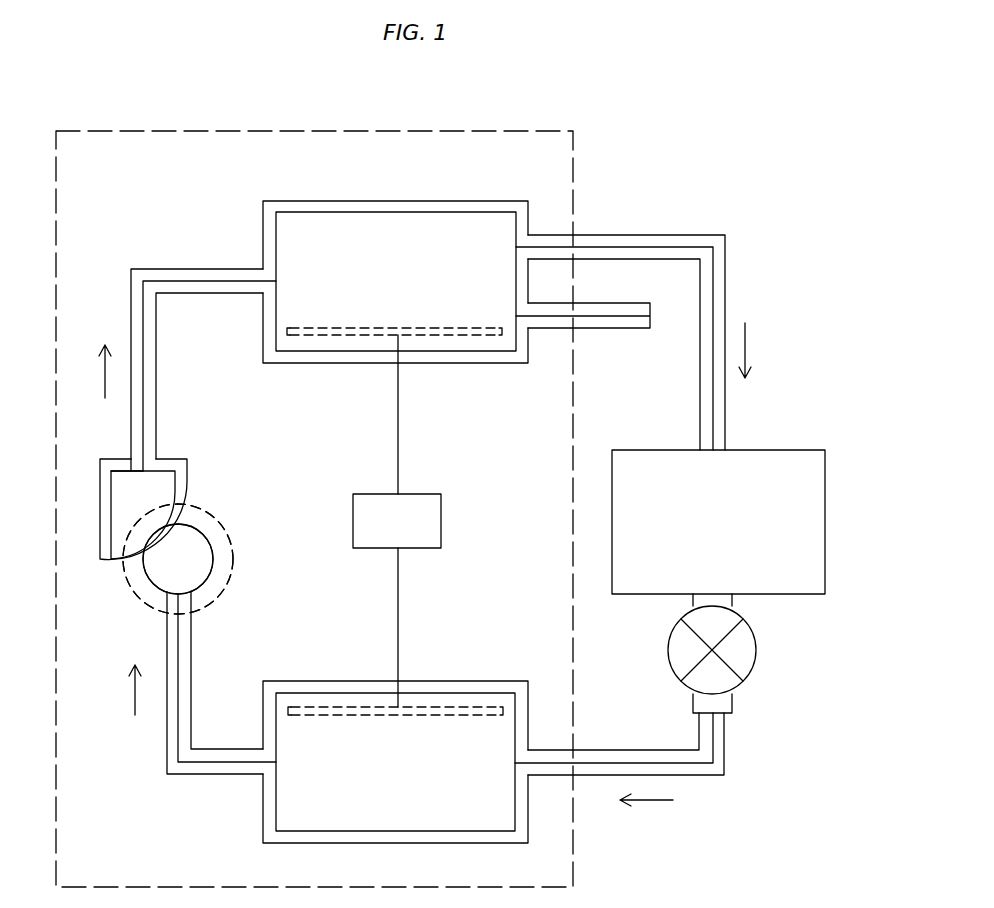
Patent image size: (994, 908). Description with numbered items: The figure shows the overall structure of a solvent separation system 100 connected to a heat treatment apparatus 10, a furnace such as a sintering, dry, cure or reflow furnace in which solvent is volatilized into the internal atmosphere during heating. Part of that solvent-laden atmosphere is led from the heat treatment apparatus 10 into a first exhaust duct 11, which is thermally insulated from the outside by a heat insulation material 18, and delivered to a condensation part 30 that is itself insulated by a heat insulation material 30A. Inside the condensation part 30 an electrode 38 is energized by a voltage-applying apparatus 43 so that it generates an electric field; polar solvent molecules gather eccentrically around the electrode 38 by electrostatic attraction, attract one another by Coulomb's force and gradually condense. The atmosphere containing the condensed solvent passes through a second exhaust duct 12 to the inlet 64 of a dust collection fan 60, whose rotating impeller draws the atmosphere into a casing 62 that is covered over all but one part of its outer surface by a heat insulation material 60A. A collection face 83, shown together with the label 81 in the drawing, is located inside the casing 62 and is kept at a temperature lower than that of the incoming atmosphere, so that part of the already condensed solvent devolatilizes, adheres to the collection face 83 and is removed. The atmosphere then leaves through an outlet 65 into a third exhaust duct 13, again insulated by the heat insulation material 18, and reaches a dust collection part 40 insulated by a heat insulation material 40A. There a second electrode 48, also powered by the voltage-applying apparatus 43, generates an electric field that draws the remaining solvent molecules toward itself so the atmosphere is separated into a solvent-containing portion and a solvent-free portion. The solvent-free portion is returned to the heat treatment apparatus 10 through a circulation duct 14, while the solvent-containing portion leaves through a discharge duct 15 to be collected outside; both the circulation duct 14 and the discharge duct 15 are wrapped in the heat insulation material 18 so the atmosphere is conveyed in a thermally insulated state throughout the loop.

The solvent separation system 100 is at (555, 130).
The heat treatment apparatus 10 is at (775, 450).
The first exhaust duct 11 is at (612, 750).
The second exhaust duct 12 is at (210, 762).
The third exhaust duct 13 is at (145, 343).
The circulation duct 14 is at (643, 247).
The discharge duct 15 is at (603, 318).
The heat insulation material 18 is at (157, 390).
The condensation part 30 is at (441, 681).
The heat insulation material 30A is at (487, 681).
The electrode 38 is at (358, 707).
The dust collection part 40 is at (443, 200).
The heat insulation material 40A is at (488, 200).
The voltage-applying apparatus 43 is at (441, 520).
The electrode 48 is at (447, 335).
The dust collection fan 60 is at (233, 517).
The heat insulation material 60A is at (213, 485).
The casing 62 is at (230, 595).
The inlet 64 is at (148, 580).
The outlet 65 is at (118, 470).
The heat insulating cover 81 is at (235, 555).
The collection face 83 is at (178, 559).